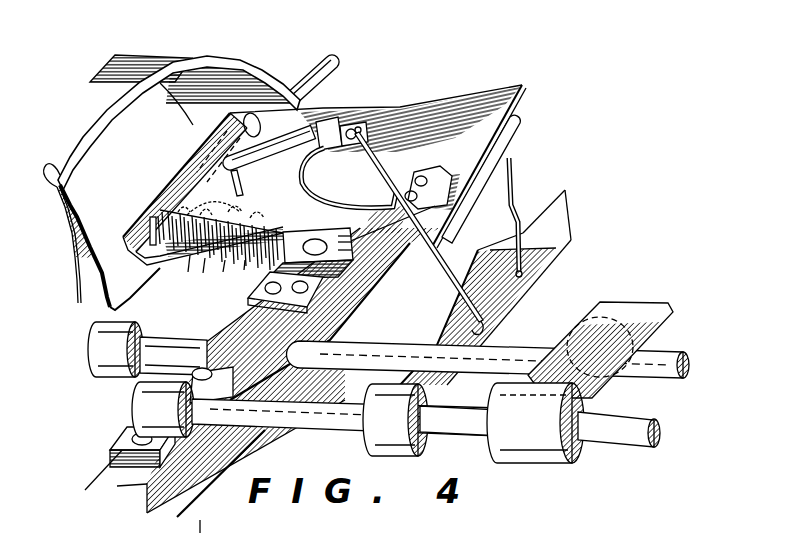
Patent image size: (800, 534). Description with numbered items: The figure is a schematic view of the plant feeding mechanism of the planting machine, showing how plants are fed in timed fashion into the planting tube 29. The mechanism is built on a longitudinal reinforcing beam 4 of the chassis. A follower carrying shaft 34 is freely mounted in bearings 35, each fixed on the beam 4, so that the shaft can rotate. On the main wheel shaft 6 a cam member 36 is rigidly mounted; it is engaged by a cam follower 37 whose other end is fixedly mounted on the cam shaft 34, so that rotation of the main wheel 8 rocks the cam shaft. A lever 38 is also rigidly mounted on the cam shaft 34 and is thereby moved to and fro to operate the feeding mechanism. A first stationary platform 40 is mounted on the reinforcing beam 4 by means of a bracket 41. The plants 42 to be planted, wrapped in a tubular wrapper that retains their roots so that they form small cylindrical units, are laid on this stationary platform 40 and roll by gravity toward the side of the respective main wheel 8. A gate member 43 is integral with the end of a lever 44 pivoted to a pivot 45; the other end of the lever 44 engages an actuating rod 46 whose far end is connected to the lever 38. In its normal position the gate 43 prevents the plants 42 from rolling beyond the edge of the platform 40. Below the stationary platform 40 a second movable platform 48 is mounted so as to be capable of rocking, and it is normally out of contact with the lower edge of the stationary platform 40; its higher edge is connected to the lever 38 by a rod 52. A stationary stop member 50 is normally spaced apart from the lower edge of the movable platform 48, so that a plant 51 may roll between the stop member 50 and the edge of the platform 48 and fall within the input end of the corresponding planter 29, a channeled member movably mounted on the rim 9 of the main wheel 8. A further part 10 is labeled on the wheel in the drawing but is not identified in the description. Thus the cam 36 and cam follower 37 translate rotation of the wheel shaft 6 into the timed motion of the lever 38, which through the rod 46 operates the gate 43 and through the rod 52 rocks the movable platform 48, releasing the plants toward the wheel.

The longitudinal reinforcing beam 4 is at (223, 453).
The main wheel shaft 6 is at (510, 350).
The main wheel 8 is at (112, 135).
The rim 9 is at (180, 60).
The rim 10 is at (88, 196).
The planting tube 29 is at (311, 78).
The follower carrying shaft 34 is at (467, 420).
The bearings 35 is at (118, 443).
The cam member 36 is at (637, 320).
The cam follower 37 is at (610, 303).
The lever 38 is at (563, 190).
The first stationary platform 40 is at (443, 110).
The bracket 41 is at (320, 276).
The plants 42 is at (201, 268).
The gate member 43 is at (313, 168).
The lever 44 is at (378, 122).
The pivot 45 is at (340, 120).
The actuating rod 46 is at (460, 285).
The second movable platform 48 is at (520, 132).
The stationary stop member 50 is at (213, 147).
The plant 51 is at (160, 212).
The rod 52 is at (513, 187).